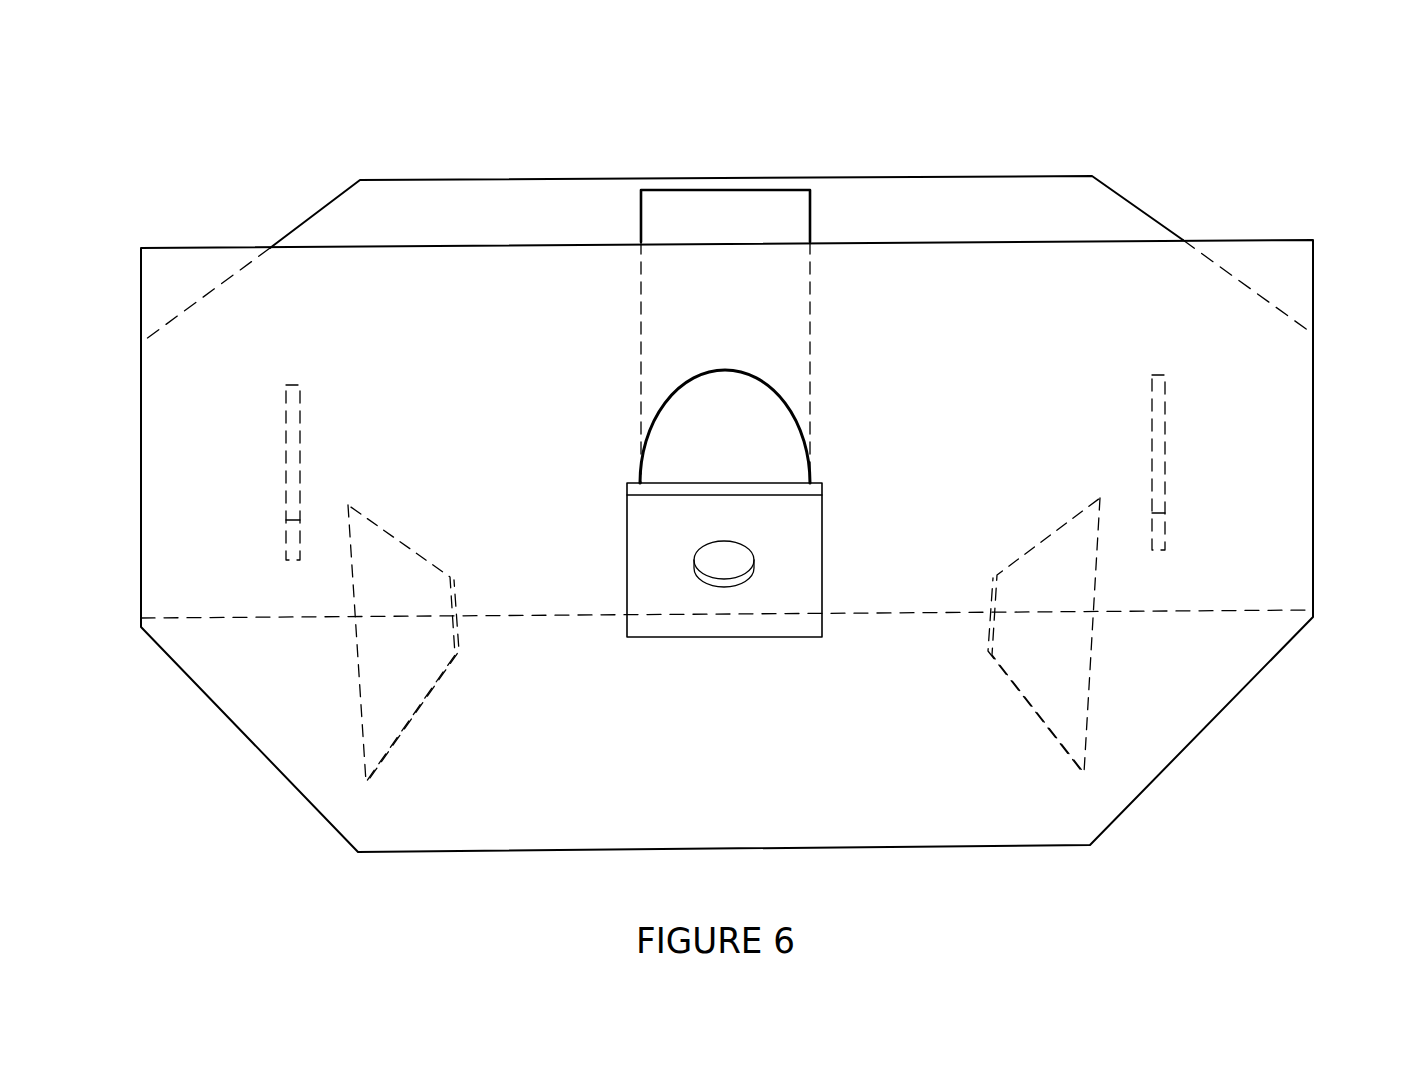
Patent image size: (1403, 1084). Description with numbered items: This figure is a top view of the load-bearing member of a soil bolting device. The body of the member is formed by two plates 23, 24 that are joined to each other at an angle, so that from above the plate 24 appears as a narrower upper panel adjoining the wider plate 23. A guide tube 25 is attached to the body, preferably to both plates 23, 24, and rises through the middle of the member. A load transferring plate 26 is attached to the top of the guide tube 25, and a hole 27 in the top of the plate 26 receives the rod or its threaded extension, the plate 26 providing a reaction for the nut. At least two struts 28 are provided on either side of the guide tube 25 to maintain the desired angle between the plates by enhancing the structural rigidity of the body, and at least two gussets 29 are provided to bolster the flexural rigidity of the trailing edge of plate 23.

The plate 23 is at (1275, 240).
The plate 24 is at (444, 180).
The guide tube 25 is at (727, 190).
The load transferring plate 26 is at (826, 520).
The hole 27 is at (700, 583).
The strut 28 is at (286, 470).
The gusset 29 is at (362, 735).